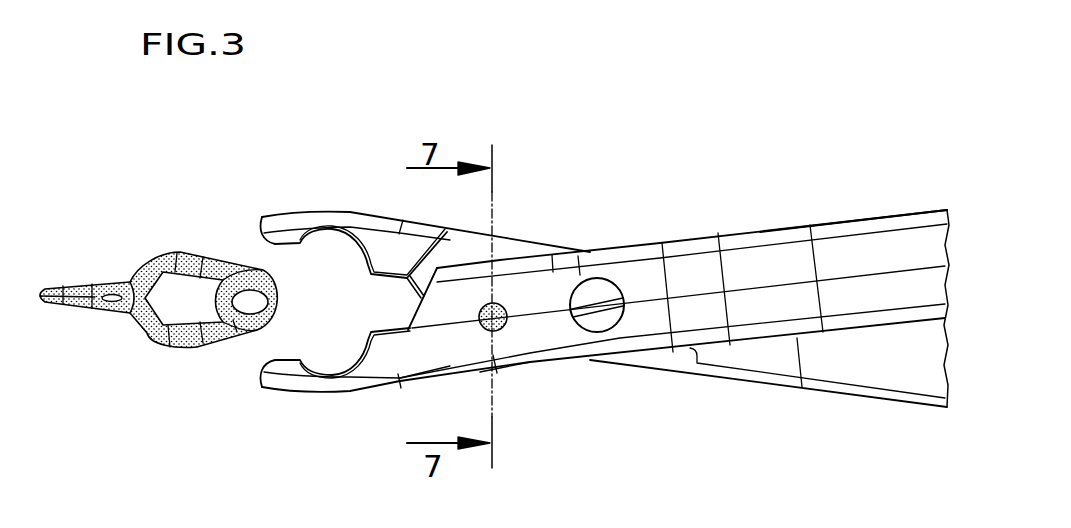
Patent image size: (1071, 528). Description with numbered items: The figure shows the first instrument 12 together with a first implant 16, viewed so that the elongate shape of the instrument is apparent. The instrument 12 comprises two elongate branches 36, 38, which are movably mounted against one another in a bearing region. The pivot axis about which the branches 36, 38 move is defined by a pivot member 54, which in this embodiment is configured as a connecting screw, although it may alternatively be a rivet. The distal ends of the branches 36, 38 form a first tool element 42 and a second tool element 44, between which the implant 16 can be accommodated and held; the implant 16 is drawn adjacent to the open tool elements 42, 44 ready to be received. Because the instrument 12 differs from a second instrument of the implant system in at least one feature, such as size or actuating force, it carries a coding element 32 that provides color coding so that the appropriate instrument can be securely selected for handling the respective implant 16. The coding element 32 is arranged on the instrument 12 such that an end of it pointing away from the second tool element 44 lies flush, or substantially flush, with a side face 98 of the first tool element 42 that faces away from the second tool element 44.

The first instrument 12 is at (683, 195).
The first implant 16 is at (88, 242).
The coding element 32 is at (503, 309).
The elongate branch 36 is at (870, 370).
The elongate branch 38 is at (870, 247).
The first tool element 42 is at (298, 228).
The second tool element 44 is at (293, 382).
The pivot member 54 is at (598, 290).
The side face 98 is at (530, 335).